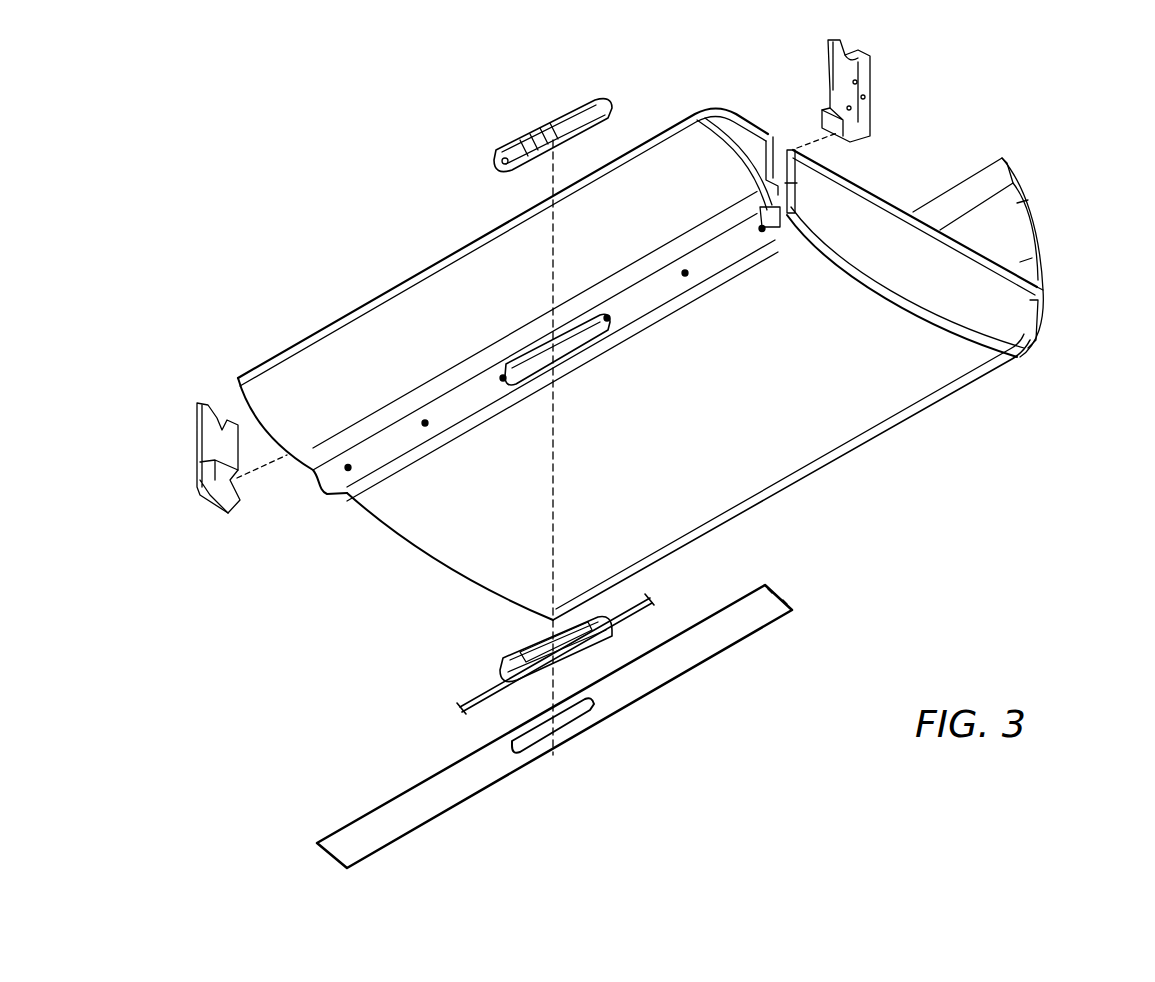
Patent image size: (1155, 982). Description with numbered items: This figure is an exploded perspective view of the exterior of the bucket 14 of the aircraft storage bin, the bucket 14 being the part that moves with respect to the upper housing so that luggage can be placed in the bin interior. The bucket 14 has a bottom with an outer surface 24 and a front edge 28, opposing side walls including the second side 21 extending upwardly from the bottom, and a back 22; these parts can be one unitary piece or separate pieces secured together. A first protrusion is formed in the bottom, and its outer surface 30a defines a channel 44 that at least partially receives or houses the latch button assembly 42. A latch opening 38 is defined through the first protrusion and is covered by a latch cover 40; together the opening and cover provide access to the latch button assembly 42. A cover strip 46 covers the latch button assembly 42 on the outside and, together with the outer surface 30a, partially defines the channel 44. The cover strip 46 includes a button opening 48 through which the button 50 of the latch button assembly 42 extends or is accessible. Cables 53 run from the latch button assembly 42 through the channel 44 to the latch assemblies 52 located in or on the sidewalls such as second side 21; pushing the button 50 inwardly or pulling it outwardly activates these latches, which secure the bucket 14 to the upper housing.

The bucket 14 is at (1073, 223).
The second side 21 is at (838, 197).
The back 22 is at (1017, 203).
The outer surface 24 is at (822, 398).
The front edge 28 is at (278, 357).
The outer surface of the first protrusion 30a is at (735, 250).
The latch opening 38 is at (582, 340).
The latch cover 40 is at (535, 132).
The latch button assembly 42 is at (503, 635).
The channel 44 is at (652, 300).
The cover strip 46 is at (697, 647).
The button opening 48 is at (573, 713).
The button 50 is at (530, 687).
The latch assemblies 52 is at (889, 76).
The cables 53 is at (473, 700).